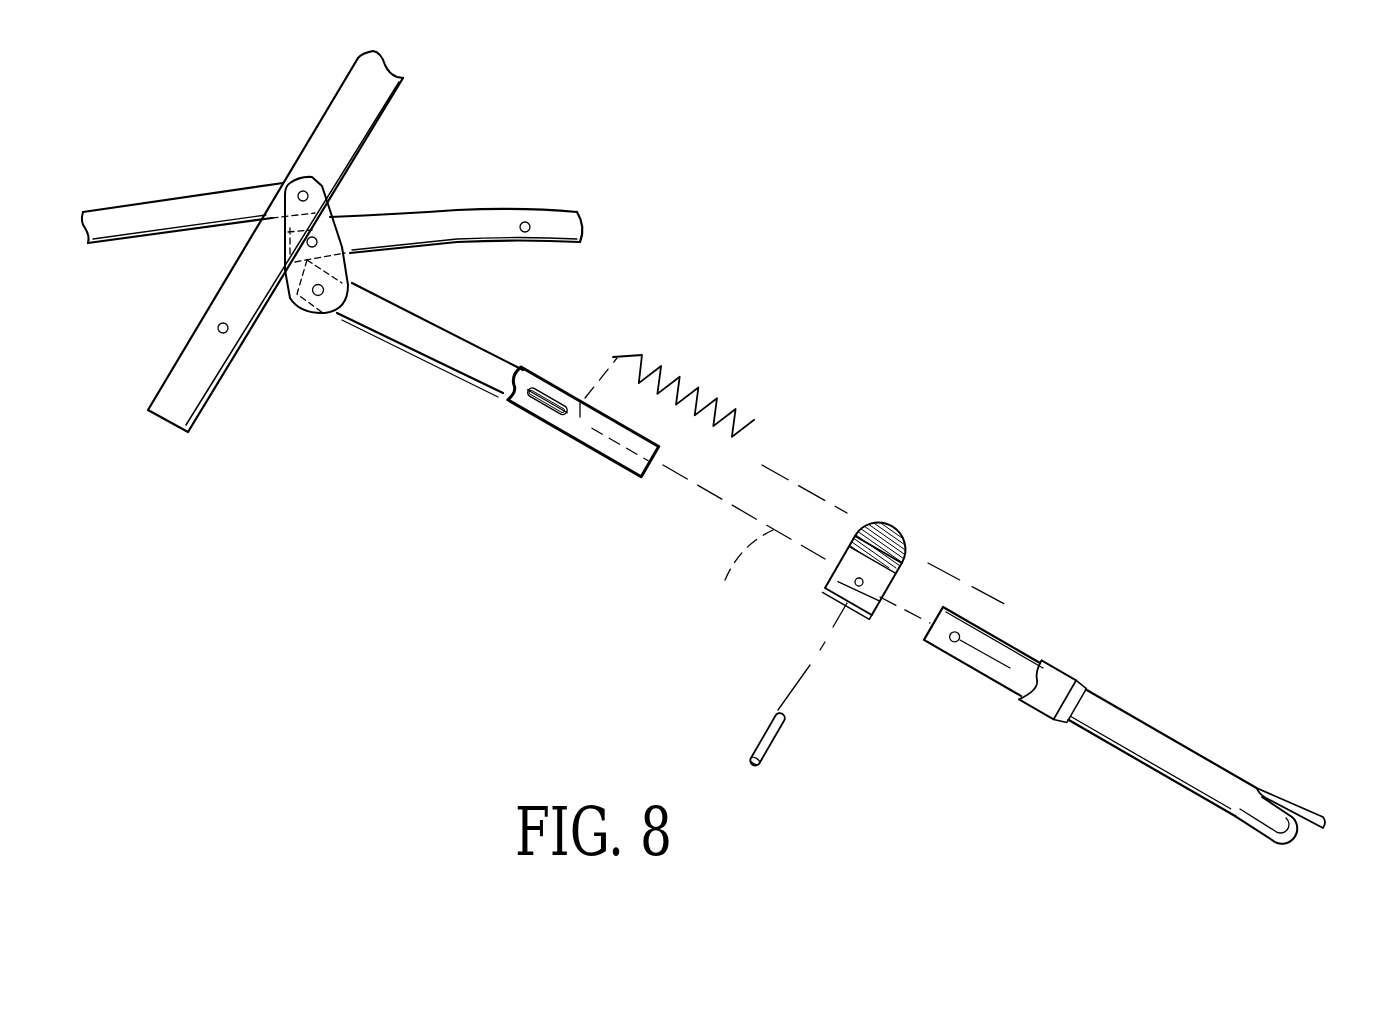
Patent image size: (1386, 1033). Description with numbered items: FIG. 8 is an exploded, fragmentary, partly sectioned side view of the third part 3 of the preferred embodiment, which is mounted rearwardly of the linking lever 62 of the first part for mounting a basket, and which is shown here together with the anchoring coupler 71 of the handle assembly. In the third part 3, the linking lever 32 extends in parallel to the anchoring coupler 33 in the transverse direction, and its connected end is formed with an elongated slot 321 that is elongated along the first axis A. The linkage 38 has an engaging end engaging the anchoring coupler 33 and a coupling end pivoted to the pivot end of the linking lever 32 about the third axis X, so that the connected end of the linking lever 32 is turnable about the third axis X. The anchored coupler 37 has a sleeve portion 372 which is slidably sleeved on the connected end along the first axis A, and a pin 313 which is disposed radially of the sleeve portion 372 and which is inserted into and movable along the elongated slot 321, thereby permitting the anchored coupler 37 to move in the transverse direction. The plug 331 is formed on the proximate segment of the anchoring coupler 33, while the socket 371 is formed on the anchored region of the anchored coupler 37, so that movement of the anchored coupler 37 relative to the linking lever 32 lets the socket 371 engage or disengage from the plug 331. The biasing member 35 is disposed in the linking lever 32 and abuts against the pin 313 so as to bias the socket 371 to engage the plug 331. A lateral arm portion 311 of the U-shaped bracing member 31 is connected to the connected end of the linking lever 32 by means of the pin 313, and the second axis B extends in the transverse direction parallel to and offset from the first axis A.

The third part 3 is at (832, 414).
The U-shaped bracing member 31 is at (1277, 795).
The lateral arm portion 311 is at (1137, 733).
The pin 313 is at (766, 742).
The linking lever 32 is at (472, 357).
The elongated slot 321 is at (552, 400).
The anchoring coupler 33 is at (488, 215).
The plug 331 is at (580, 224).
The biasing member 35 is at (702, 383).
The anchored coupler 37 is at (897, 571).
The socket 371 is at (876, 530).
The sleeve portion 372 is at (860, 605).
The linkage 38 is at (292, 312).
The linking lever 62 is at (178, 212).
The anchoring coupler 71 is at (350, 110).
The third axis X is at (322, 294).
The first axis A is at (738, 568).
The second axis B is at (982, 594).